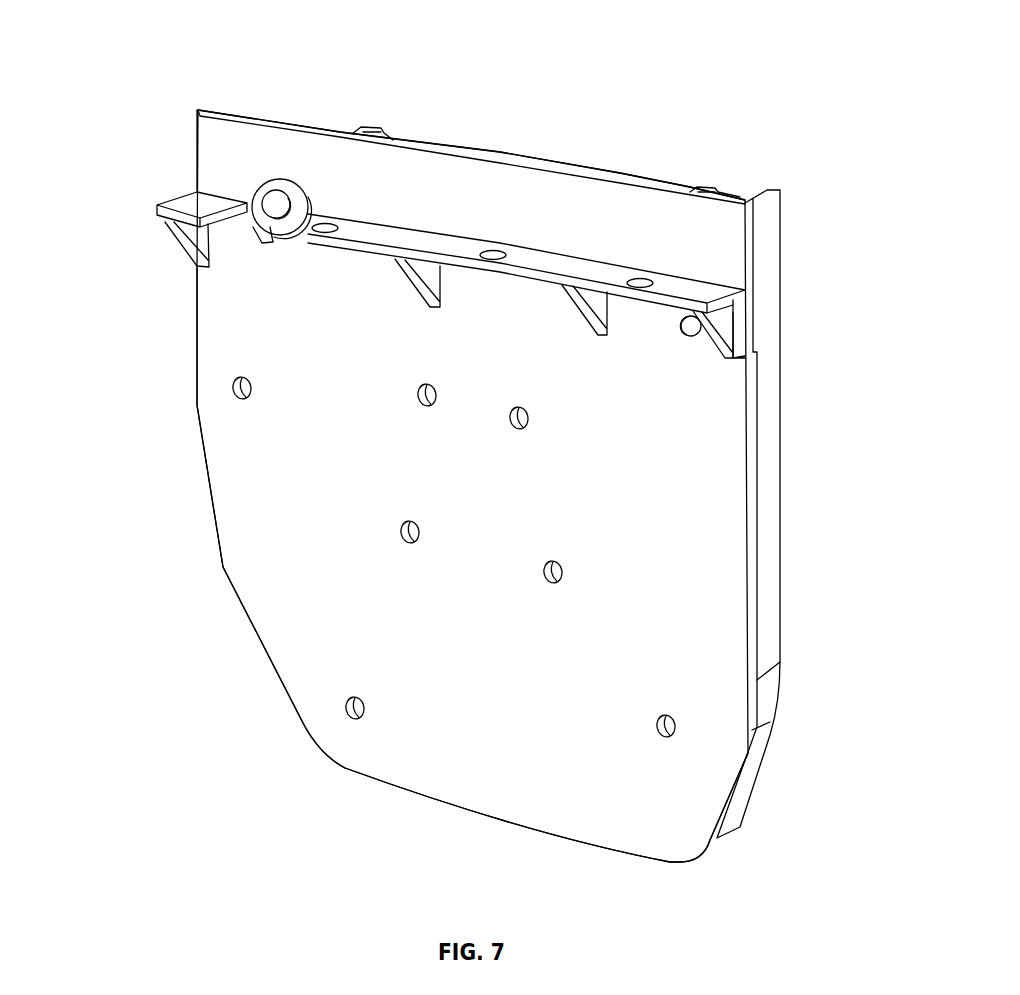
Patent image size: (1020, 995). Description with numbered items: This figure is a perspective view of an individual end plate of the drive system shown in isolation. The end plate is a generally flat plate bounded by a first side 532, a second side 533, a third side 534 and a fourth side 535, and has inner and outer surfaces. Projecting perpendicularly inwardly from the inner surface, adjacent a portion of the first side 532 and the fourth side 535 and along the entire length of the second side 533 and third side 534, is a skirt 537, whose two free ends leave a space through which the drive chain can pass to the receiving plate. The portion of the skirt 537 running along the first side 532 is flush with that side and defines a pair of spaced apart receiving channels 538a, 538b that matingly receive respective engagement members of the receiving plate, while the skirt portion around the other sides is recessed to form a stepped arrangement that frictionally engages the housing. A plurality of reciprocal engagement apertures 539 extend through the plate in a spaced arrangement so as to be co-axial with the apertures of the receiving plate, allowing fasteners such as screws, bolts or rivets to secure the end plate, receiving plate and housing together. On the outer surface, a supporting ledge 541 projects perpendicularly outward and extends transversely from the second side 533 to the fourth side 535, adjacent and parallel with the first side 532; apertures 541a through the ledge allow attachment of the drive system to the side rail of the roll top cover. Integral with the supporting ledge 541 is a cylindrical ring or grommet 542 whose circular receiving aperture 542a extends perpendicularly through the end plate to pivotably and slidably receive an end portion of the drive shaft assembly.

The first side 532 is at (562, 160).
The second side 533 is at (770, 475).
The third side 534 is at (503, 822).
The fourth side 535 is at (203, 450).
The skirt 537 is at (776, 237).
The receiving channel 538a is at (377, 130).
The receiving channel 538b is at (714, 192).
The reciprocal engagement aperture 539 is at (563, 570).
The supporting ledge 541 is at (597, 273).
The apertures 541a is at (640, 286).
The cylindrical ring or grommet 542 is at (273, 180).
The circular receiving aperture 542a is at (282, 198).